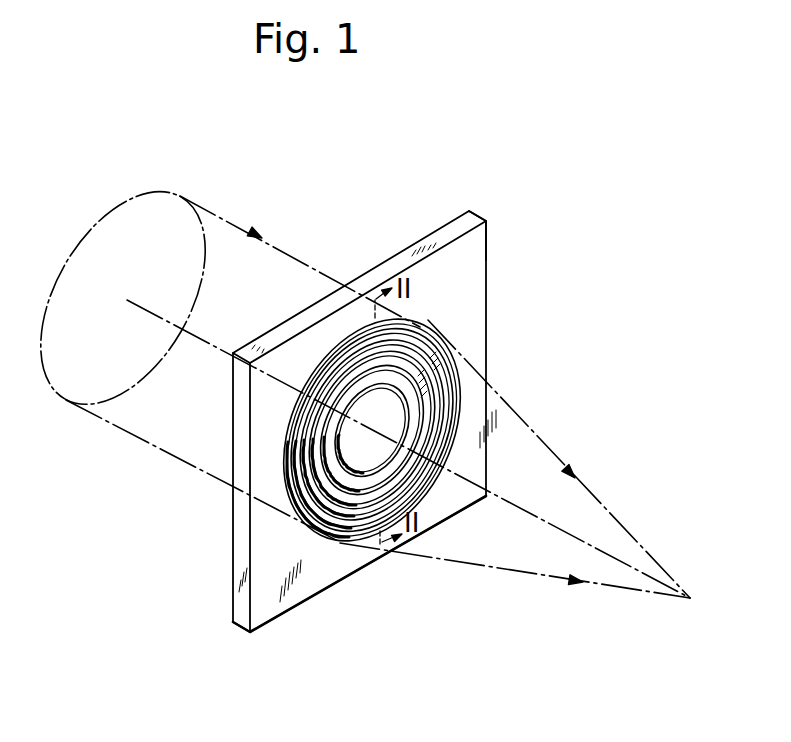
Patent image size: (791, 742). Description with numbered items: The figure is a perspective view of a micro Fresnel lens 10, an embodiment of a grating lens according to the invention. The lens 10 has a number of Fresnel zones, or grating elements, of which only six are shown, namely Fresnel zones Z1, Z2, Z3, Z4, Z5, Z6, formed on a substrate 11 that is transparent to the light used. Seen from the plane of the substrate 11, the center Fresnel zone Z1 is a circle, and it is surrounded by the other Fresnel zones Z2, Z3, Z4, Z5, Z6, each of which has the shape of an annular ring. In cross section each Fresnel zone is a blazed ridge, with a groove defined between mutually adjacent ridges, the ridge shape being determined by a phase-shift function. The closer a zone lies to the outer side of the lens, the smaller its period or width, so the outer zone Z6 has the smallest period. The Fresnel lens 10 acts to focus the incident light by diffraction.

The micro Fresnel lens 10 is at (499, 201).
The substrate 11 is at (480, 246).
The center Fresnel zone Z1 is at (417, 457).
The Fresnel zone Z2 is at (403, 430).
The Fresnel zone Z3 is at (427, 372).
The Fresnel zone Z4 is at (433, 360).
The Fresnel zone Z5 is at (432, 343).
The Fresnel zone Z6 is at (420, 330).